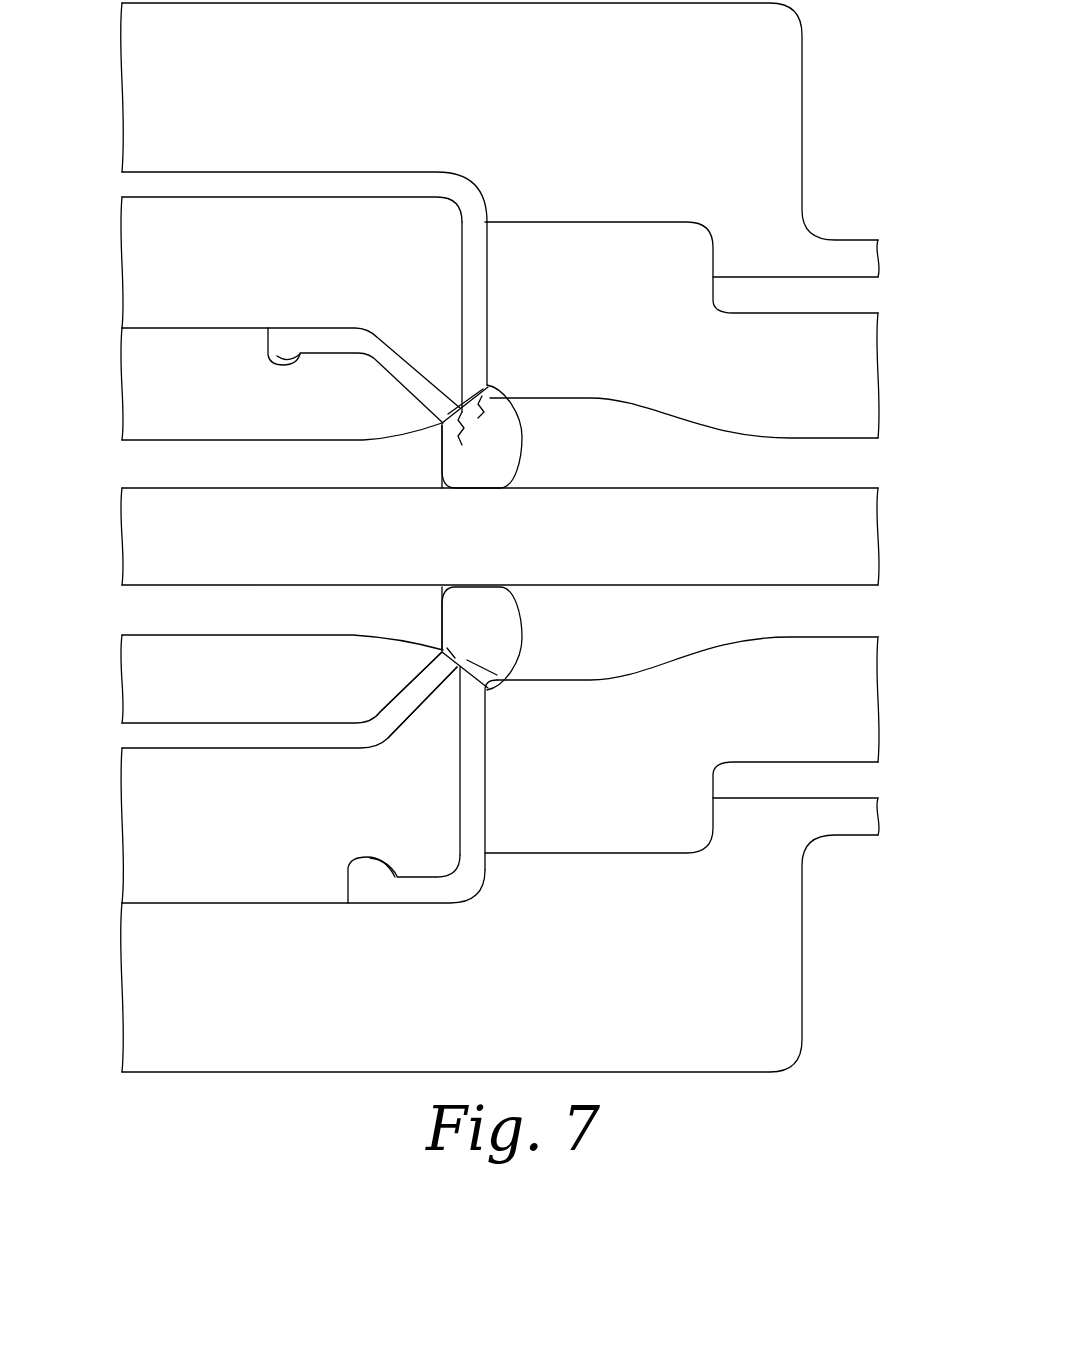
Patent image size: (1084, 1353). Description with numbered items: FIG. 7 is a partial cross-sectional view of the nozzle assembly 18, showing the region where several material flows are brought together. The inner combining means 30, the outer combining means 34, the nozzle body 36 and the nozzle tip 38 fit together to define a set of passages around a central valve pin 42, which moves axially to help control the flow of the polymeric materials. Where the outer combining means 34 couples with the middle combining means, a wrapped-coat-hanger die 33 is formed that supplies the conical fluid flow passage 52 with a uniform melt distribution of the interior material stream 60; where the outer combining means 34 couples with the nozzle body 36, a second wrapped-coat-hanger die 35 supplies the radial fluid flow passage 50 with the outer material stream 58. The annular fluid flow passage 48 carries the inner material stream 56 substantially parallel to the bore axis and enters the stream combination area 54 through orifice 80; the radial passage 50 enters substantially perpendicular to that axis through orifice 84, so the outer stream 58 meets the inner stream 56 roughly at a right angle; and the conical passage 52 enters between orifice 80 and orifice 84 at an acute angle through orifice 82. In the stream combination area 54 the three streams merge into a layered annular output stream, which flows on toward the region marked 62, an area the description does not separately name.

The nozzle assembly 18 is at (843, 944).
The inner combining means 30 is at (233, 402).
The wrapped-coat-hanger die 33 is at (320, 328).
The outer combining means 34 is at (233, 282).
The wrapped-coat-hanger die 35 is at (392, 903).
The nozzle body 36 is at (578, 90).
The nozzle tip 38 is at (640, 341).
The valve pin 42 is at (690, 550).
The annular fluid flow passage 48 is at (320, 478).
The radial fluid flow passage 50 is at (487, 271).
The conical fluid flow passage 52 is at (297, 748).
The stream combination area 54 is at (523, 446).
The inner material stream 56 is at (222, 469).
The outer material stream 58 is at (282, 189).
The interior material stream 60 is at (237, 745).
The outlet flow passage 62 is at (817, 470).
The orifice 80 is at (442, 487).
The orifice 82 is at (464, 535).
The orifice 84 is at (492, 535).